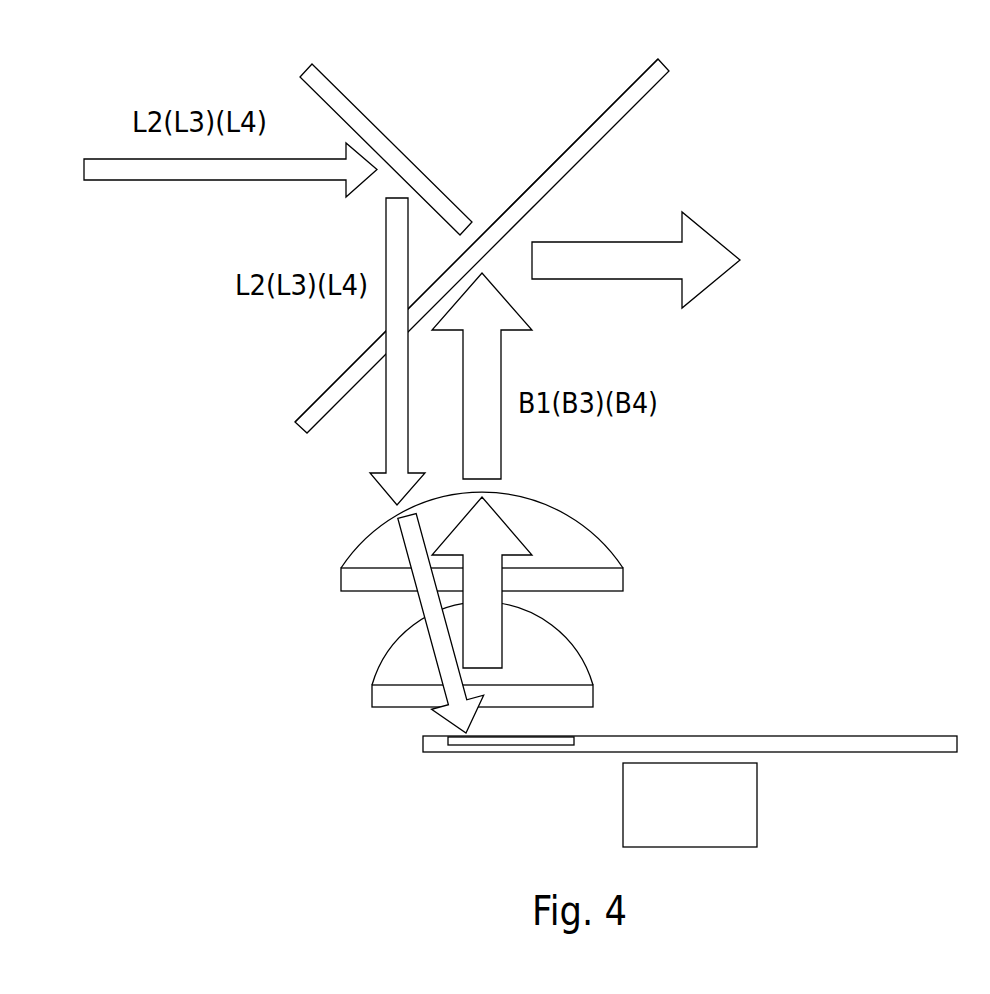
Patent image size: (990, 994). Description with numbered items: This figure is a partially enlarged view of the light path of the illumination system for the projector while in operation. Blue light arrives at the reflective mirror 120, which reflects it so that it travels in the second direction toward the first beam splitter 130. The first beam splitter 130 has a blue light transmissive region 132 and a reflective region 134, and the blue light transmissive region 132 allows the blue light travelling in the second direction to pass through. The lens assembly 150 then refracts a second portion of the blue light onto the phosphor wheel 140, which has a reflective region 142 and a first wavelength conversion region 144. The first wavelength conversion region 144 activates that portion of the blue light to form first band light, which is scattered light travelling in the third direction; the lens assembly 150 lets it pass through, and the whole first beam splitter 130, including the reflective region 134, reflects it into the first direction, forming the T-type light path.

The reflective mirror 120 is at (392, 143).
The first beam splitter 130 is at (482, 222).
The blue light transmissive region 132 is at (452, 263).
The reflective region 134 is at (538, 177).
The phosphor wheel 140 is at (690, 668).
The reflective region 142 is at (910, 739).
The first wavelength conversion region 144 is at (653, 690).
The lens assembly 150 is at (344, 646).